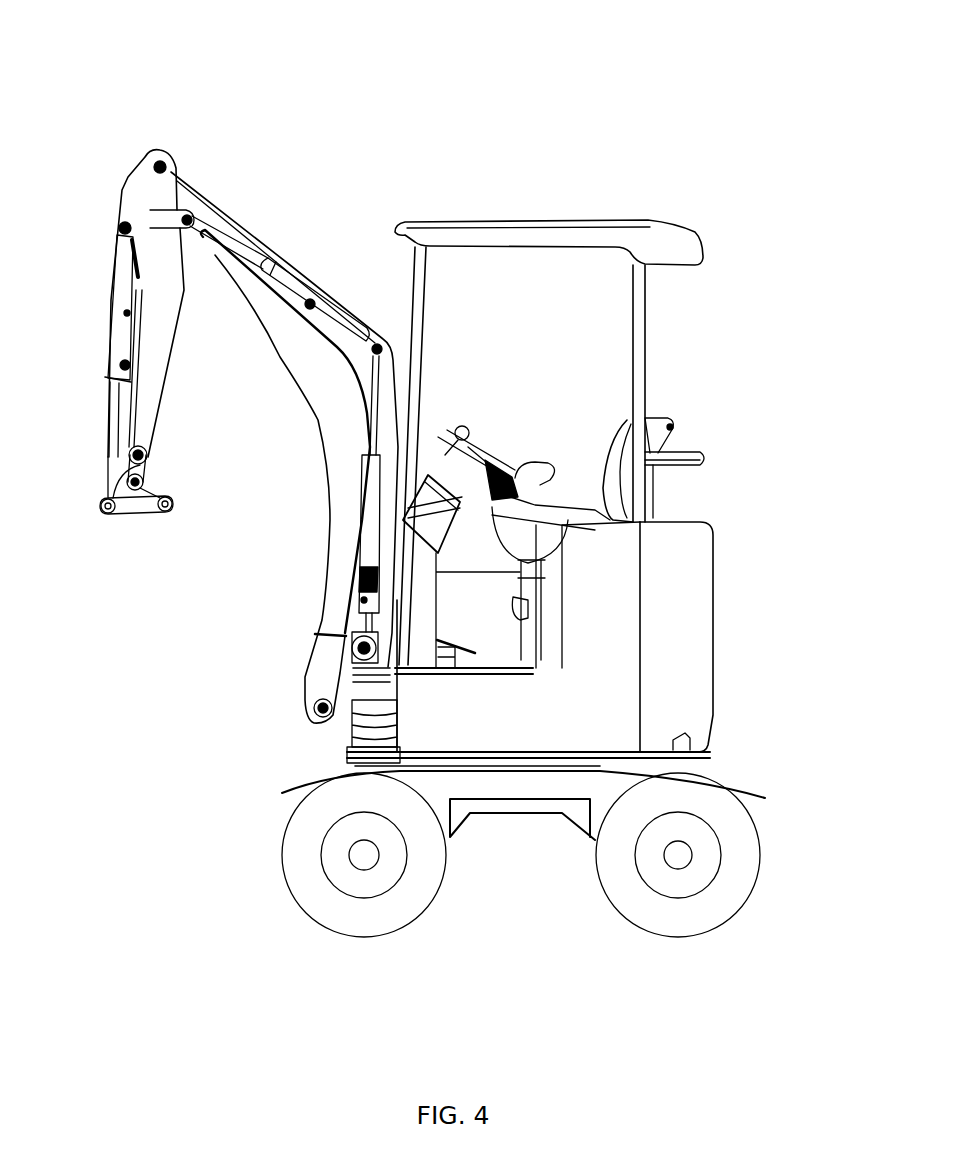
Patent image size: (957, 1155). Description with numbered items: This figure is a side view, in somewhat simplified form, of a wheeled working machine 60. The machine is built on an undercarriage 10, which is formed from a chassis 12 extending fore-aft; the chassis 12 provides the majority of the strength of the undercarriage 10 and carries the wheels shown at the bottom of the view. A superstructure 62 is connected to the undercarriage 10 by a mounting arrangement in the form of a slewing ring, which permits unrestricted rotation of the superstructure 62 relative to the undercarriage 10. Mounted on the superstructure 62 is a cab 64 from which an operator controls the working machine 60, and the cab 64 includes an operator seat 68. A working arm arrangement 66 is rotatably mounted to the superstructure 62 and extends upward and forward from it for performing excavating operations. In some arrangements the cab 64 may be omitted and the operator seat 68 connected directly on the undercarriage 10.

The undercarriage 10 is at (201, 848).
The chassis 12 is at (515, 795).
The working machine 60 is at (381, 121).
The superstructure 62 is at (679, 661).
The cab 64 is at (688, 246).
The working arm arrangement 66 is at (307, 343).
The operator seat 68 is at (622, 475).